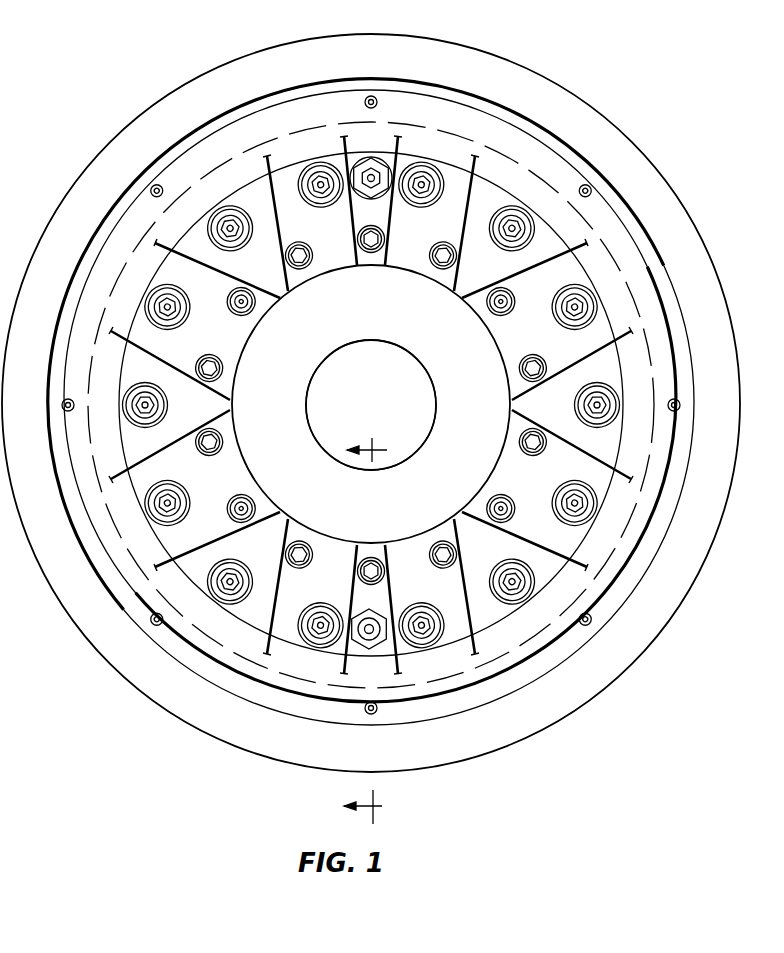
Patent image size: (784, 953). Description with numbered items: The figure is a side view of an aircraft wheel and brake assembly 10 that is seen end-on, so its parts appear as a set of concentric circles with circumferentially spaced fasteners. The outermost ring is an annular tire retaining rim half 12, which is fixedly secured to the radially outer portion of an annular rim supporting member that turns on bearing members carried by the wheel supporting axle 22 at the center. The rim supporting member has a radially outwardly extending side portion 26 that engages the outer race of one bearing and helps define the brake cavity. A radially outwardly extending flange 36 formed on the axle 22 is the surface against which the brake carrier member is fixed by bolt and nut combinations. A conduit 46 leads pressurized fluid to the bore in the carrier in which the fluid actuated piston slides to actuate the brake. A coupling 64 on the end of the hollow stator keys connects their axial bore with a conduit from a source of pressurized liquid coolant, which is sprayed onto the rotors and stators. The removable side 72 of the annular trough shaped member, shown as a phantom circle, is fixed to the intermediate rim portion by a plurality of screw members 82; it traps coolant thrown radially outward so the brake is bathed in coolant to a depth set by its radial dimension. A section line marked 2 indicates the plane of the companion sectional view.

The wheel and brake assembly 10 is at (551, 68).
The tire retaining rim half 12 is at (642, 185).
The wheel supporting axle 22 is at (397, 397).
The side portion 26 is at (295, 527).
The flange 36 is at (447, 433).
The conduit 46 is at (365, 632).
The coupling 64 is at (376, 246).
The side 72 is at (548, 167).
The screw member 82 is at (377, 95).
The section line 2- 2 is at (352, 627).